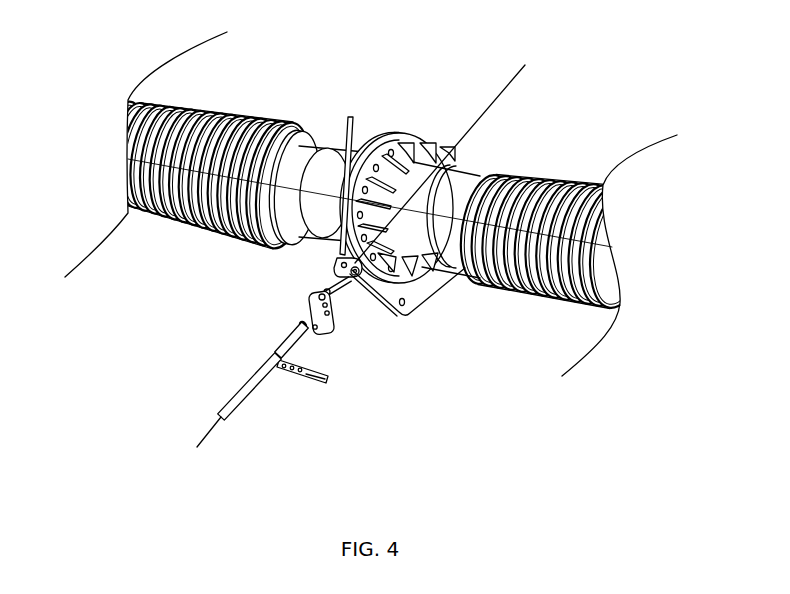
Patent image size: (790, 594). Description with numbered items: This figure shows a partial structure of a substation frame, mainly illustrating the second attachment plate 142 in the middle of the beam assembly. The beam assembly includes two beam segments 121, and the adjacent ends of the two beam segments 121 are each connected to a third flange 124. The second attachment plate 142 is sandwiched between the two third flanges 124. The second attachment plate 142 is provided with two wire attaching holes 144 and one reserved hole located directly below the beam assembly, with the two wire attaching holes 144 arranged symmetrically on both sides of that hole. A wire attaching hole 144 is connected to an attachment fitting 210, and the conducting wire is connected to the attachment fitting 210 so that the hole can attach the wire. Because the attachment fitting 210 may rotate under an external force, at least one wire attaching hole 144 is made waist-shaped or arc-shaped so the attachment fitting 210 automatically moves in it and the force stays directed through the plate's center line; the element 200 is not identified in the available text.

The beam segment 121 is at (237, 133).
The third flange 124 is at (350, 152).
The second attachment plate 142 is at (417, 297).
The wire attaching hole 144 is at (332, 266).
The cable tube 200 is at (250, 388).
The attachment fitting 210 is at (320, 320).